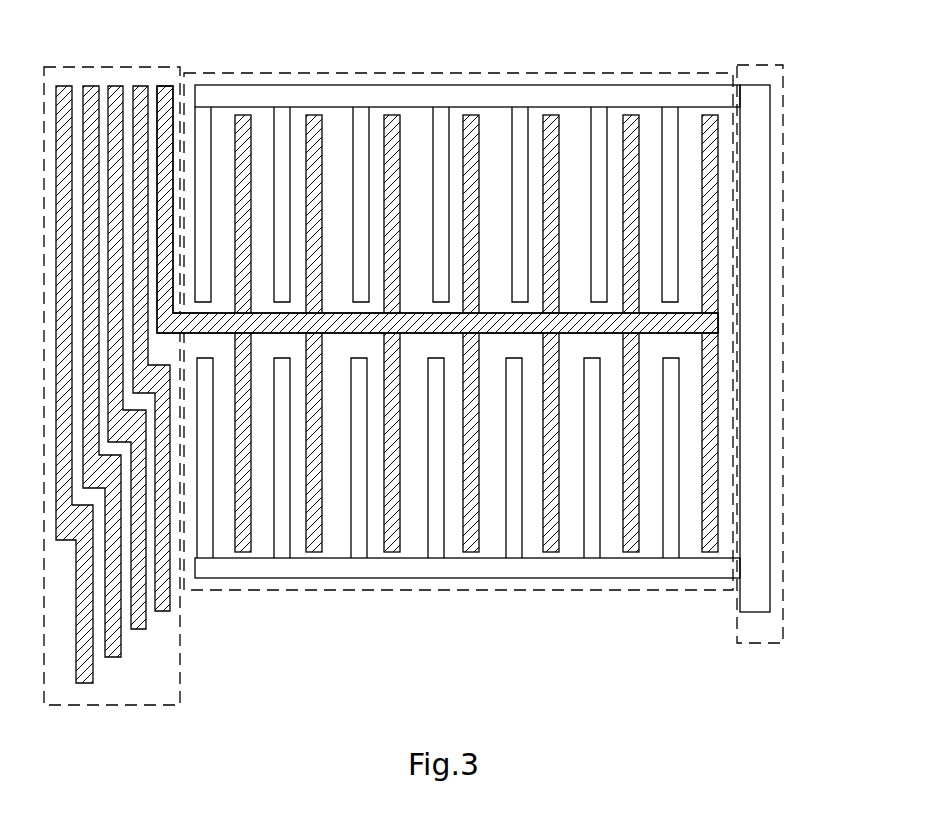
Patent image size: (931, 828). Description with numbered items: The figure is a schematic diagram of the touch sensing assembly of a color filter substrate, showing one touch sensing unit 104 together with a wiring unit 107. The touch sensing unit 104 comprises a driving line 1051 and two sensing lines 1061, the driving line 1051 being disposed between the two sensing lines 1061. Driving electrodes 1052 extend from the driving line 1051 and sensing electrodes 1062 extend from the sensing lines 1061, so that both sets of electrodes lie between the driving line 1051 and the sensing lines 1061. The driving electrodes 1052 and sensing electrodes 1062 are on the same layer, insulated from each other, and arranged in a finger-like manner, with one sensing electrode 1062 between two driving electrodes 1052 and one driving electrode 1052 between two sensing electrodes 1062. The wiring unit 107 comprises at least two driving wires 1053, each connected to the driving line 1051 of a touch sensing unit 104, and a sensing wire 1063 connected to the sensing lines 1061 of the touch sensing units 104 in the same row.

The touch sensing unit 104 is at (398, 82).
The wiring unit 107 is at (68, 80).
The driving line 1051 is at (688, 314).
The driving electrodes 1052 is at (712, 145).
The driving wires 1053 is at (175, 88).
The sensing lines 1061 is at (563, 95).
The sensing electrodes 1062 is at (668, 425).
The sensing wire 1063 is at (755, 200).